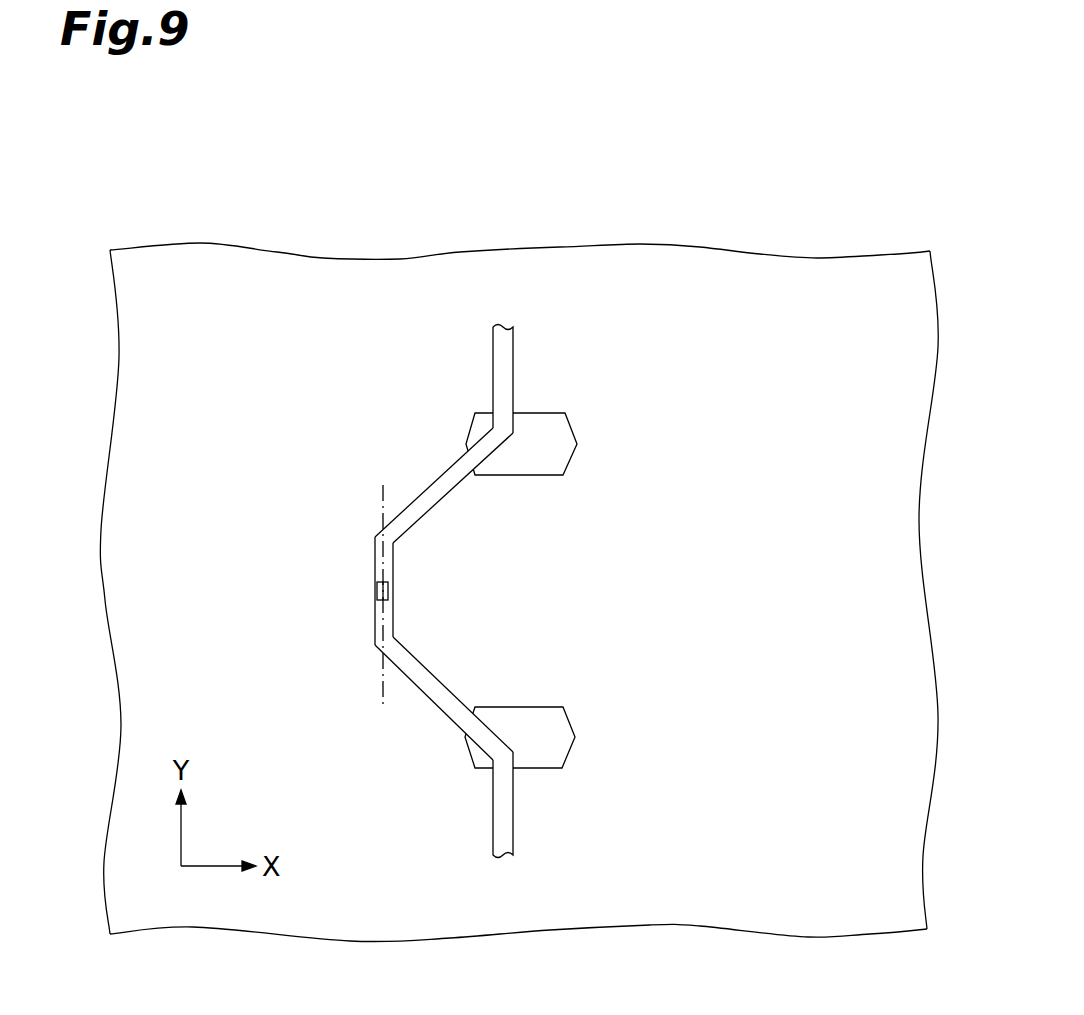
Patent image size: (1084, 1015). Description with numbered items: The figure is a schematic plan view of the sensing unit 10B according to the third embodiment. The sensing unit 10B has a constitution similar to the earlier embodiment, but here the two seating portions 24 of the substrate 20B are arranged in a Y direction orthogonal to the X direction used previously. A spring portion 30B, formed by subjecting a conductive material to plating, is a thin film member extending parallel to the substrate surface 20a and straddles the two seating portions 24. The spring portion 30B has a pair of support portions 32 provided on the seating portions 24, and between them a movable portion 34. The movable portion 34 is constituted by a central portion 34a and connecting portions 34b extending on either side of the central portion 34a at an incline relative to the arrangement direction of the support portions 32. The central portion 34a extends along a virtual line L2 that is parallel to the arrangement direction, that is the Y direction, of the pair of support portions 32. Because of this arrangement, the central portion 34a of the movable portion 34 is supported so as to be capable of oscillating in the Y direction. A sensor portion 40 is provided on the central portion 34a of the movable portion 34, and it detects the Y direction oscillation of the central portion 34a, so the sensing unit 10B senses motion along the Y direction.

The sensing unit 10B is at (847, 139).
The substrate 20B is at (730, 249).
The substrate surface 20a is at (402, 270).
The seating portions 24 is at (558, 435).
The spring portion 30B is at (478, 591).
The support portions 32 is at (505, 428).
The movable portion 34 is at (465, 594).
The central portion 34a is at (387, 613).
The connecting portions 34b is at (428, 500).
The sensor portion 40 is at (377, 590).
The virtual line L2 is at (380, 688).